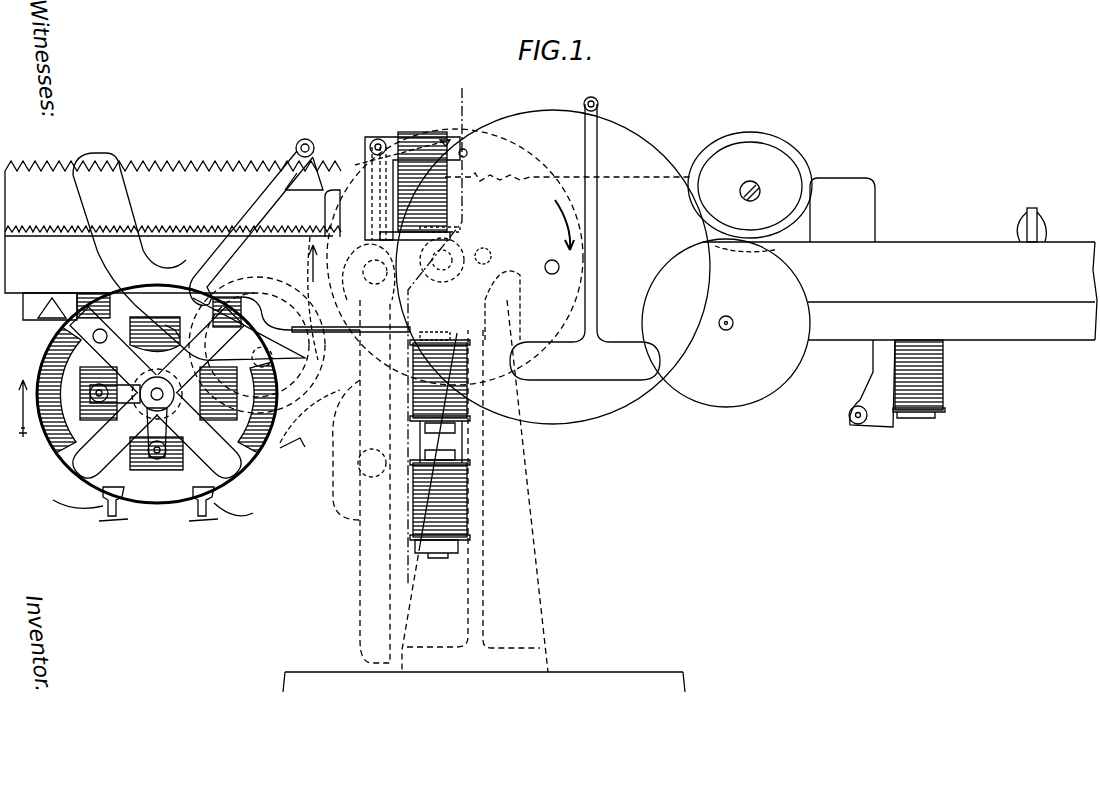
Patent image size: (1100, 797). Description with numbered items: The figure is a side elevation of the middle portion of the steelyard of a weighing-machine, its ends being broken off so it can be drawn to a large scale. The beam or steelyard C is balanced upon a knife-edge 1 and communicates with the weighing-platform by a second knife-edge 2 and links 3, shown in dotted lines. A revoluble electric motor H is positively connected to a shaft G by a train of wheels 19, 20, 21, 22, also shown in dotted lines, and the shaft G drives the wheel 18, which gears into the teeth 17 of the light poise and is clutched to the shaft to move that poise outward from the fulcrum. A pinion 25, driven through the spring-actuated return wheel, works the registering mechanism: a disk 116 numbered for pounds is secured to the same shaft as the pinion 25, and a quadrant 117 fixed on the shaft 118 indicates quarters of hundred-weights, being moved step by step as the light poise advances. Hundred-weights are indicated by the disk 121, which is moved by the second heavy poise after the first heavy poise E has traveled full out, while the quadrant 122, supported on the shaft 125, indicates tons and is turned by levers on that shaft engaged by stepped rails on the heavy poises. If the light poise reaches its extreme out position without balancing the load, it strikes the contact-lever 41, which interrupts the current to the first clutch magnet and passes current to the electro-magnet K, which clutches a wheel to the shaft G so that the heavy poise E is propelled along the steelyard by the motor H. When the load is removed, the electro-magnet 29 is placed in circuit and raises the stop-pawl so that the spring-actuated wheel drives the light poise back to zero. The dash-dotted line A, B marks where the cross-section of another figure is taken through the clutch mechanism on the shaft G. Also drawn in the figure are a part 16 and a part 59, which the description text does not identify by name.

The shaft 125 is at (314, 142).
The quadrant 122 is at (189, 256).
The solenoid bracket pivot 59 is at (467, 156).
The shaft 118 is at (598, 104).
The quadrant 117 is at (585, 371).
The disk 116 is at (733, 407).
The disk 121 is at (676, 184).
The contact-lever 41 is at (1035, 215).
The electro-magnet 29 is at (943, 384).
The wheel 22 is at (306, 264).
The wheel 21 is at (195, 344).
The wheel 20 is at (184, 331).
The wheel 19 is at (150, 385).
The wheel 18 is at (450, 253).
The teeth 17 is at (496, 257).
The disk 16 is at (553, 267).
The pinion 25 is at (733, 322).
The links 3 is at (440, 458).
The knife-edge 2 is at (375, 272).
The knife-edge 1 is at (488, 258).
The shaft G is at (442, 270).
The electric motor H is at (148, 403).
The electro-magnet K is at (440, 445).
The heavy poise E is at (440, 201).
The steelyard C is at (551, 288).
The section line A is at (439, 332).
The section line B is at (407, 596).